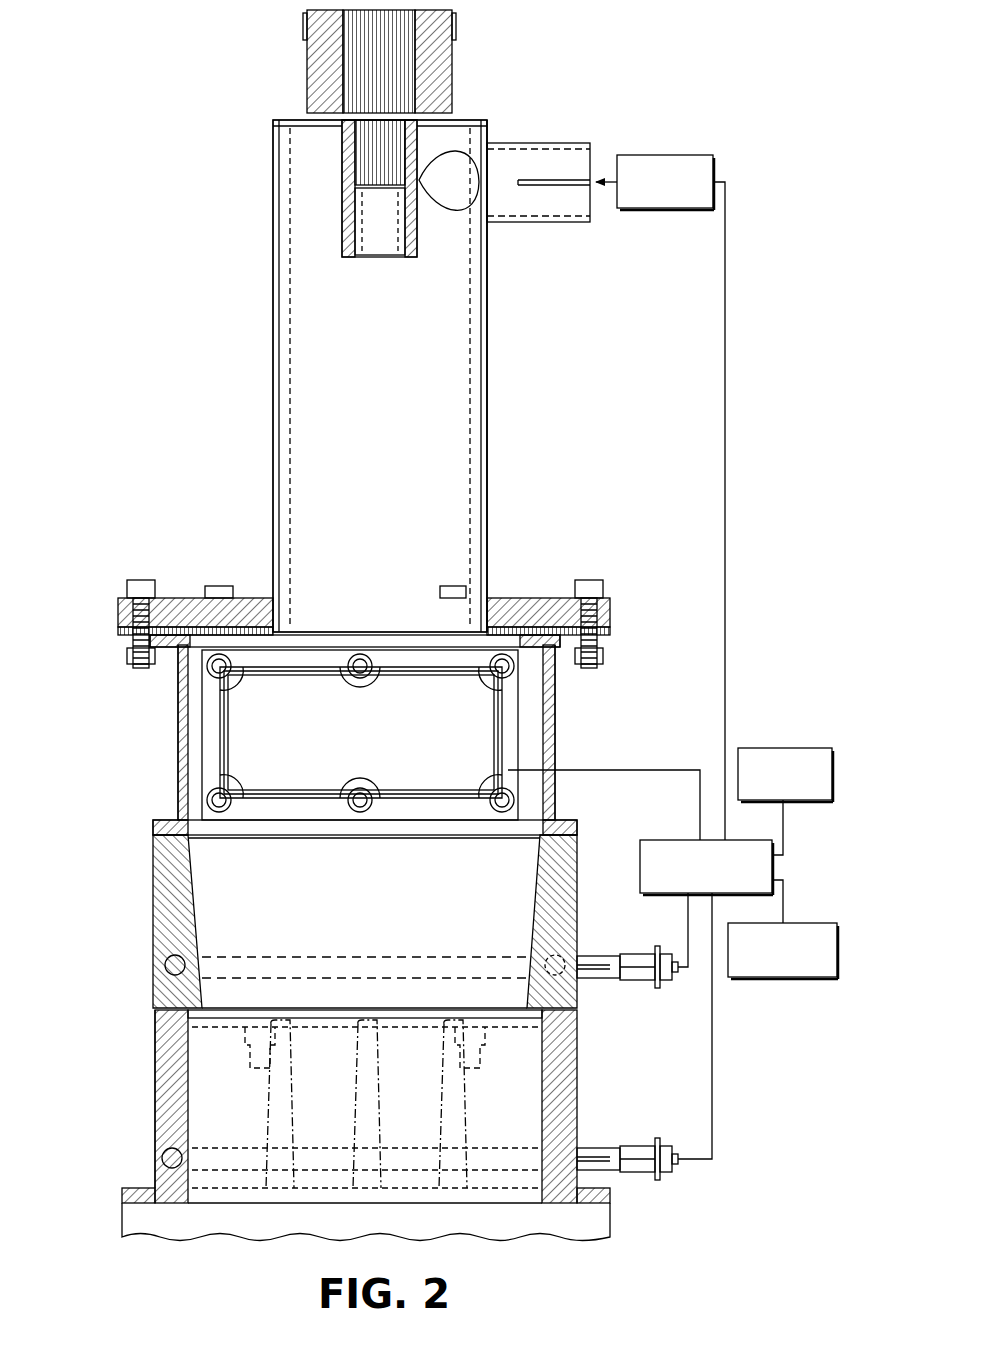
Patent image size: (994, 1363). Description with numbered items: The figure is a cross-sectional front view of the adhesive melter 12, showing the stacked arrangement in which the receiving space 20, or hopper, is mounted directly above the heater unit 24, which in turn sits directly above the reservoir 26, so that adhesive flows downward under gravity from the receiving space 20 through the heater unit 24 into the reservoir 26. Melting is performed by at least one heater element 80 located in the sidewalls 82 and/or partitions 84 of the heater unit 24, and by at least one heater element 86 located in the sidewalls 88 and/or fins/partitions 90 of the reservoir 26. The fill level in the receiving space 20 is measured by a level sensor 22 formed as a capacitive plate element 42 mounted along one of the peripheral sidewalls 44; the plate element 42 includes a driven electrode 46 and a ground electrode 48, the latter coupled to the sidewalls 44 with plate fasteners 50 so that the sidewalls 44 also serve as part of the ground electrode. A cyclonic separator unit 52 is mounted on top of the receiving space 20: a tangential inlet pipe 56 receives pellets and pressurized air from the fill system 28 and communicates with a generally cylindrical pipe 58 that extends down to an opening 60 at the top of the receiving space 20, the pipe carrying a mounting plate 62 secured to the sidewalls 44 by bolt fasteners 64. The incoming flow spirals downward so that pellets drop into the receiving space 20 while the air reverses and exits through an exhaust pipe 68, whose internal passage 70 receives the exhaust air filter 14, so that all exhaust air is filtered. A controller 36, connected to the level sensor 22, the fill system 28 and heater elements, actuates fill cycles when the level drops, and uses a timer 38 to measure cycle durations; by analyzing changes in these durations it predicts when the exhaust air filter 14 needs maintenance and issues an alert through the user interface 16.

The adhesive melter 12 is at (265, 118).
The exhaust air filter 14 is at (452, 70).
The user interface 16 is at (800, 978).
The receiving space 20 is at (556, 718).
The level sensor 22 is at (521, 696).
The heater unit 24 is at (580, 890).
The reservoir 26 is at (580, 1122).
The fill system 28 is at (713, 156).
The controller 36 is at (656, 840).
The timer 38 is at (790, 748).
The plate element 42 is at (203, 798).
The peripheral sidewalls 44 is at (178, 710).
The driven electrode 46 is at (386, 745).
The ground electrode 48 is at (205, 744).
The plate fasteners 50 is at (360, 660).
The cyclonic separator unit 52 is at (267, 350).
The tangential inlet pipe 56 is at (548, 143).
The generally cylindrical pipe 58 is at (489, 345).
The opening 60 is at (430, 636).
The mounting plate 62 is at (525, 600).
The bolt fasteners 64 is at (127, 608).
The exhaust pipe 68 is at (344, 230).
The internal passage 70 is at (357, 255).
The heater element 80 is at (165, 972).
The sidewalls 82 is at (580, 940).
The partitions 84 is at (382, 914).
The heater element 86 is at (162, 1158).
The sidewalls 88 is at (155, 1082).
The fins/partitions 90 is at (293, 1106).